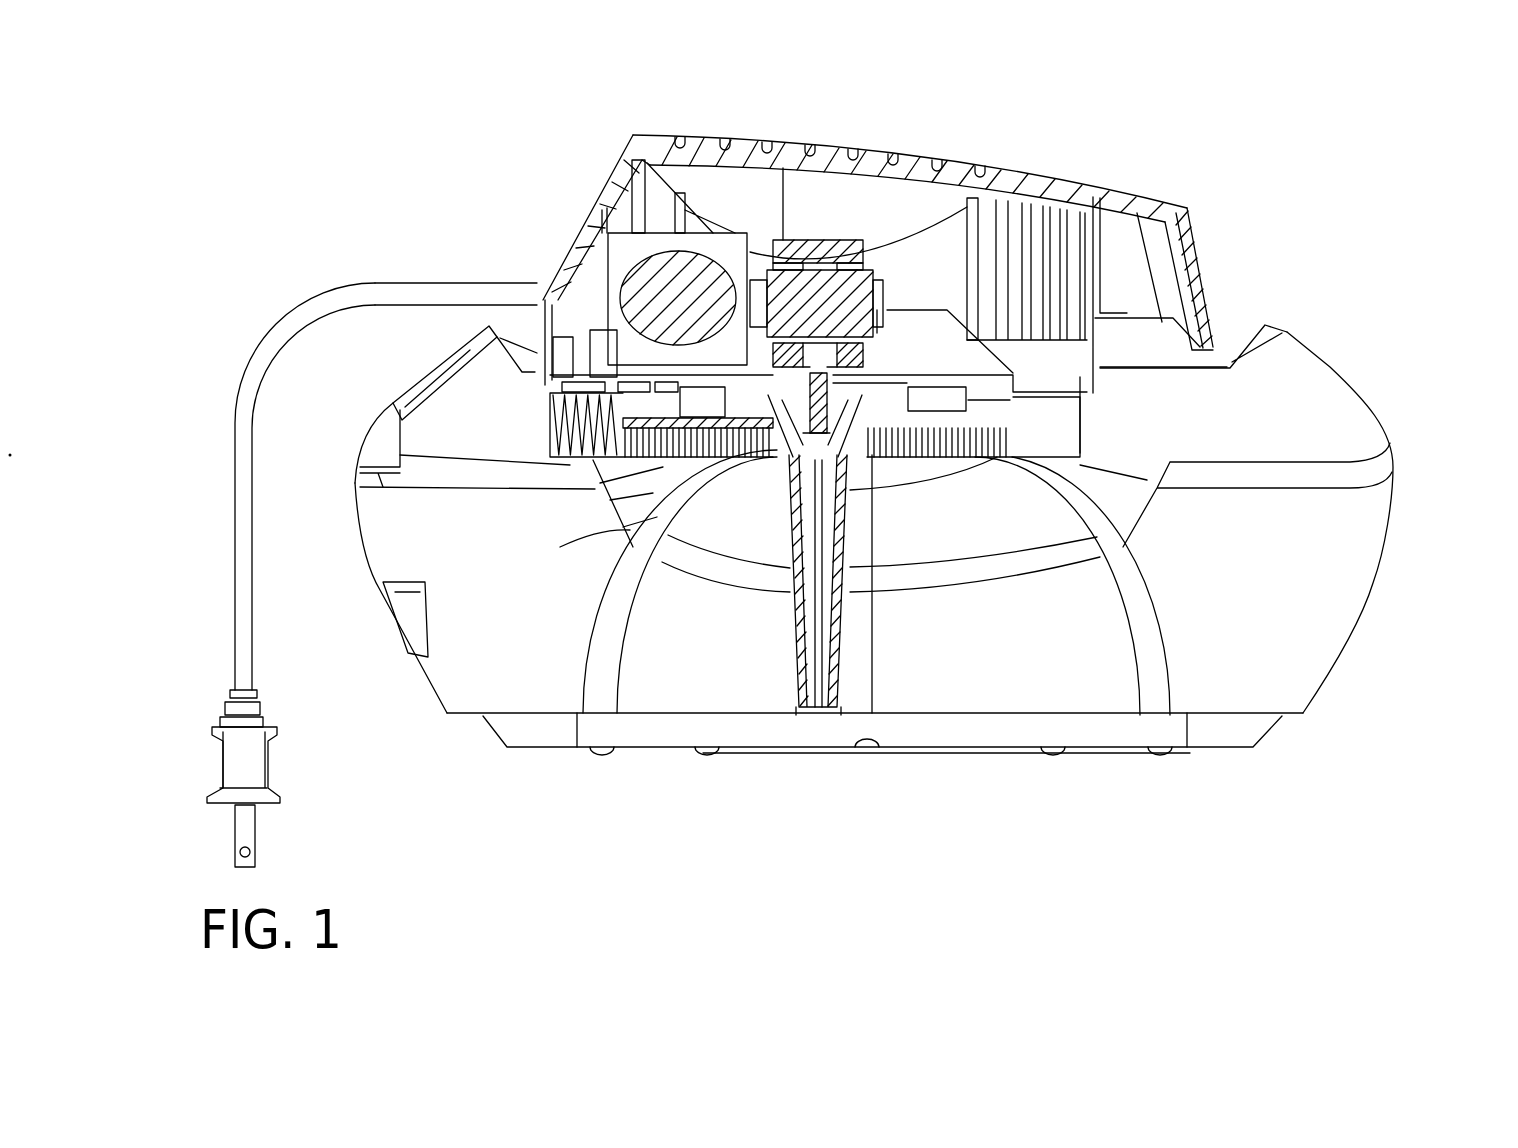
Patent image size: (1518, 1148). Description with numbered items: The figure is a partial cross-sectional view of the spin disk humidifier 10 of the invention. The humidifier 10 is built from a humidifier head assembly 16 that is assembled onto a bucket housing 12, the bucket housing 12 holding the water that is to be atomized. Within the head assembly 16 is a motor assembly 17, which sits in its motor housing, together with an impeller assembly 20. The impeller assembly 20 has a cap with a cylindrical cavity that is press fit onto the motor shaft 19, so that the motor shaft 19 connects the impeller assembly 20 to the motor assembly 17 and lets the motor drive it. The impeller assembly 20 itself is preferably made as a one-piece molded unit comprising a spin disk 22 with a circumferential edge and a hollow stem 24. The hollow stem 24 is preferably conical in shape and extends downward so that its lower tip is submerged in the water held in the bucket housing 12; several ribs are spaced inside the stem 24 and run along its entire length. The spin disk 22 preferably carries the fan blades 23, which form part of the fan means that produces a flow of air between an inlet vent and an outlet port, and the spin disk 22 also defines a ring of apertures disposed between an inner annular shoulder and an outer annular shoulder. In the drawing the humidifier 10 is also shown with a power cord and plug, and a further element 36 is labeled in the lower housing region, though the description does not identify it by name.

The spin disk humidifier 10 is at (480, 195).
The bucket housing 12 is at (1337, 597).
The humidifier head assembly 16 is at (1200, 198).
The motor assembly 17 is at (850, 290).
The motor shaft 19 is at (815, 383).
The impeller assembly 20 is at (855, 546).
The spin disk 22 is at (1042, 420).
The fan blades 23 is at (943, 402).
The hollow stem 24 is at (842, 672).
The spring bracket 36 is at (648, 500).